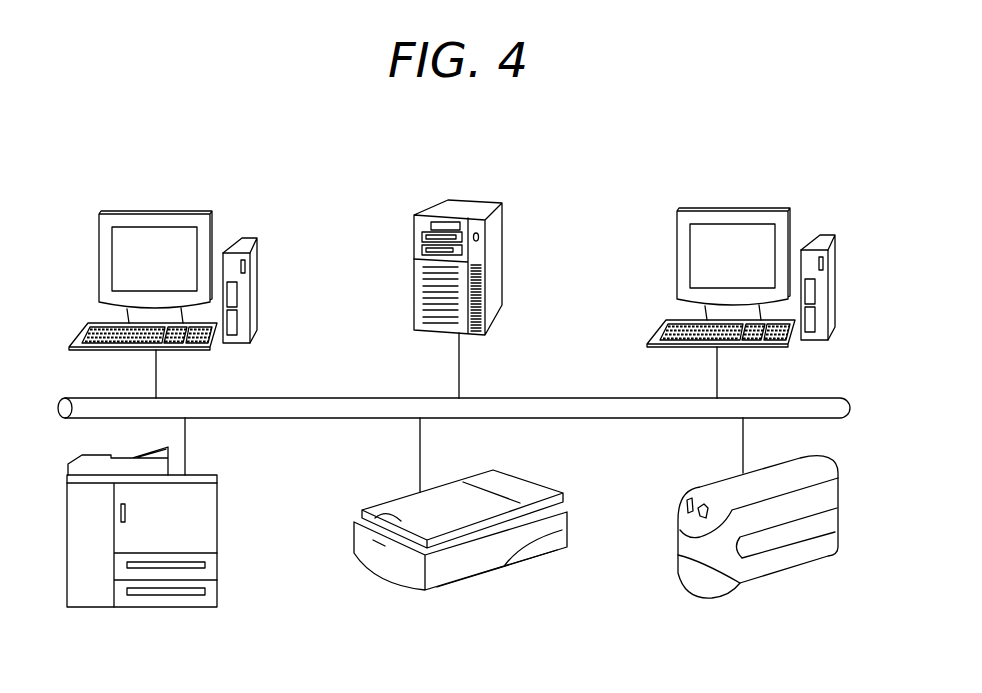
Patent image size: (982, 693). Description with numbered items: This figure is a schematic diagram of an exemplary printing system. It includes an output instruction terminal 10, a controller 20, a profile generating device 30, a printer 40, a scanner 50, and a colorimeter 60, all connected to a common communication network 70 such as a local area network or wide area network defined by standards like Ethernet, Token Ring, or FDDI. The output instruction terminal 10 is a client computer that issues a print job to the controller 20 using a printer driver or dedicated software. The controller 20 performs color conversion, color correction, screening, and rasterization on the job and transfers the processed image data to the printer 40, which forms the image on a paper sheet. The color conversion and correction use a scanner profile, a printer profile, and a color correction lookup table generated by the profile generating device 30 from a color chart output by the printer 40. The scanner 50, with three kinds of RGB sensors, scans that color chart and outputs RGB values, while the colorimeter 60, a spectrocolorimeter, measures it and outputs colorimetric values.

The output instruction terminal 10 is at (123, 210).
The controller 20 is at (452, 200).
The profile generating device 30 is at (701, 207).
The printer 40 is at (170, 608).
The scanner 50 is at (435, 590).
The colorimeter 60 is at (745, 587).
The communication network 70 is at (800, 398).